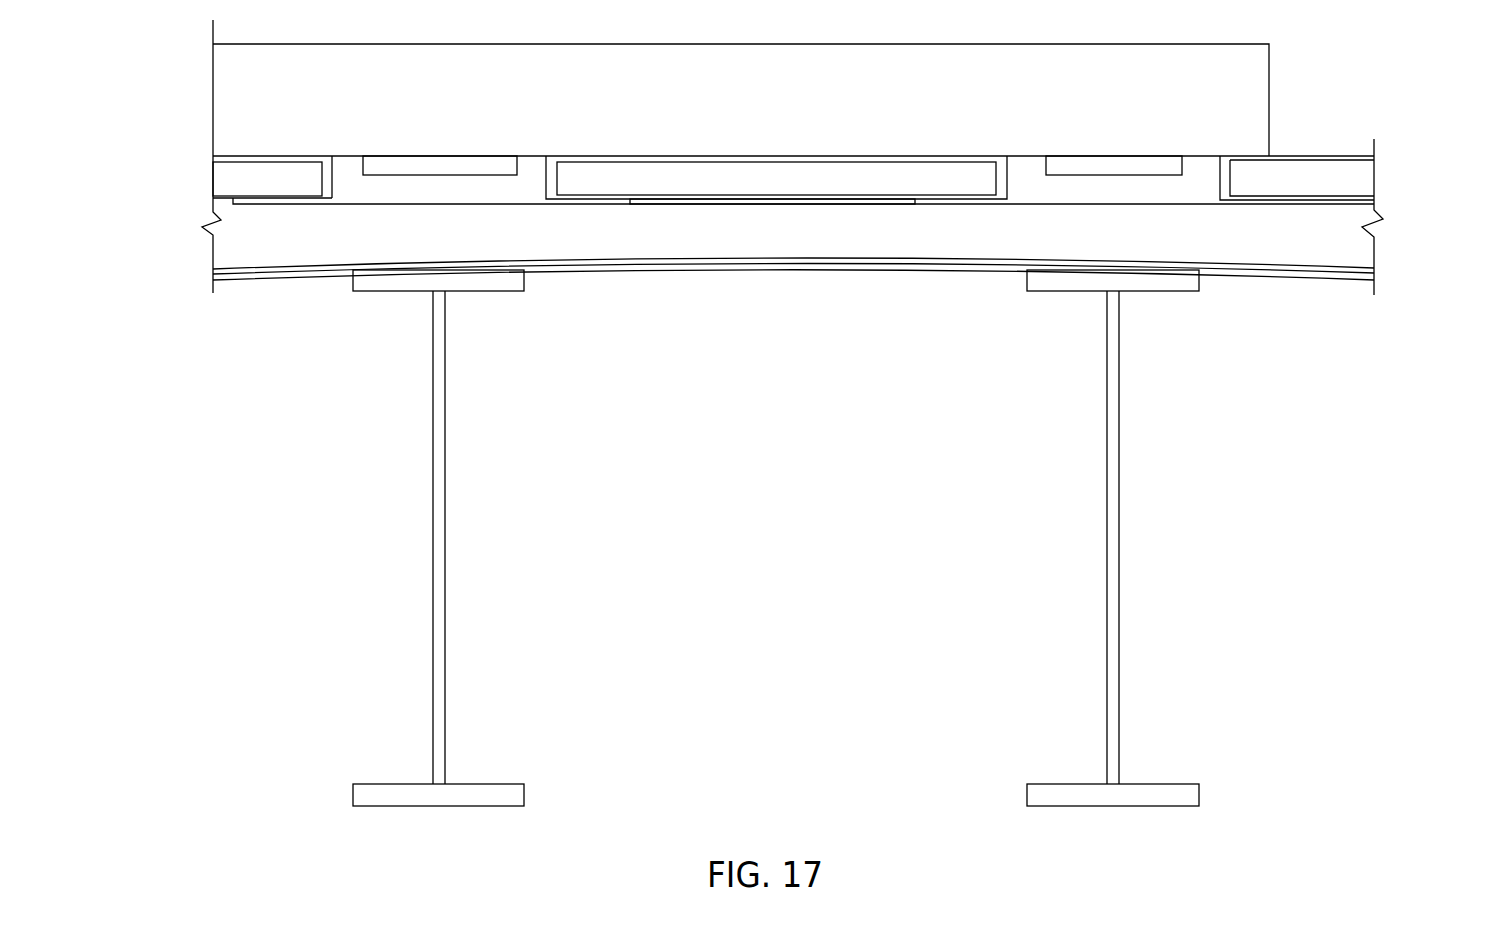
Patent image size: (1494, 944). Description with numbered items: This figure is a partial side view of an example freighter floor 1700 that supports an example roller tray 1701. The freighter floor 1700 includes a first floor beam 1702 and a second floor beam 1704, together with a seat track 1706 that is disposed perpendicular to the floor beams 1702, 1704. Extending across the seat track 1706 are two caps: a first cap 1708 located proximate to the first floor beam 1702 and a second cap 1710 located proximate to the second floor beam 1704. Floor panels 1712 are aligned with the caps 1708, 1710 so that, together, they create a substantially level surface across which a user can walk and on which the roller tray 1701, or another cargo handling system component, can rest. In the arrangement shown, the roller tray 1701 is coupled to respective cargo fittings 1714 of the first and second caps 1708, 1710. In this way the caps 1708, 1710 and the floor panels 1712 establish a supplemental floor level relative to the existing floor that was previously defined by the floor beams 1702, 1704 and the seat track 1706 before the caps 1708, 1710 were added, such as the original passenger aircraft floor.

The freighter floor 1700 is at (186, 150).
The roller tray 1701 is at (400, 44).
The first floor beam 1702 is at (437, 535).
The second floor beam 1704 is at (1108, 525).
The seat track 1706 is at (213, 244).
The first cap 1708 is at (543, 173).
The second cap 1710 is at (1207, 174).
The floor panels 1712 is at (213, 193).
The cargo fittings 1714 is at (440, 155).